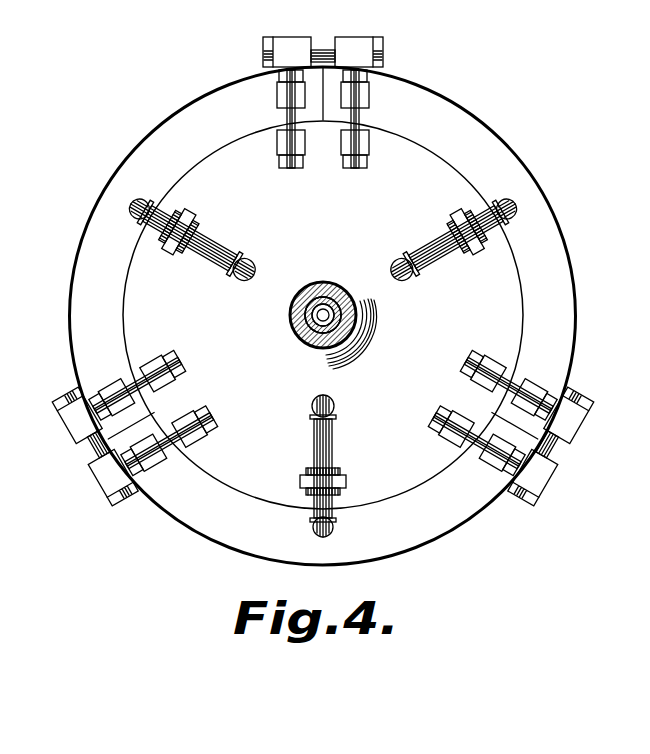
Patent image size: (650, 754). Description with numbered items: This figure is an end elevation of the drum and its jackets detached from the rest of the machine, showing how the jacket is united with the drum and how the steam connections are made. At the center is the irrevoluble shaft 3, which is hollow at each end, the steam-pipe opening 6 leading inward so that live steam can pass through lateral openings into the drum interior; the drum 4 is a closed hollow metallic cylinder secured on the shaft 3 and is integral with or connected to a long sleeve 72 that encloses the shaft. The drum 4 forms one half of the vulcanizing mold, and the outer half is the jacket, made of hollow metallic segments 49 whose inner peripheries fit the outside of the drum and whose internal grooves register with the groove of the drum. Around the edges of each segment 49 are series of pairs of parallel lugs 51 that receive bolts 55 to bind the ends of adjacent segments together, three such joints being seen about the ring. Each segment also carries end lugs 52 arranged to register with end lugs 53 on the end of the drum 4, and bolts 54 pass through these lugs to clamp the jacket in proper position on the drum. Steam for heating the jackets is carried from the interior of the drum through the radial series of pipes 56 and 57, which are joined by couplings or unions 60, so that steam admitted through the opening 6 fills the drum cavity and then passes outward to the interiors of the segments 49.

The shaft 3 is at (356, 315).
The drum 4 is at (323, 288).
The steam-pipe opening 6 is at (289, 315).
The jacket segment 49 is at (323, 316).
The parallel lugs 51 is at (285, 37).
The end lugs of the segment 52 is at (277, 92).
The end lugs of the drum 53 is at (277, 143).
The bolts 54 is at (287, 115).
The bolts 55 is at (321, 50).
The steam pipe 56 is at (333, 447).
The steam pipe 57 is at (333, 498).
The coupling 60 is at (347, 480).
The sleeve 72 is at (327, 282).